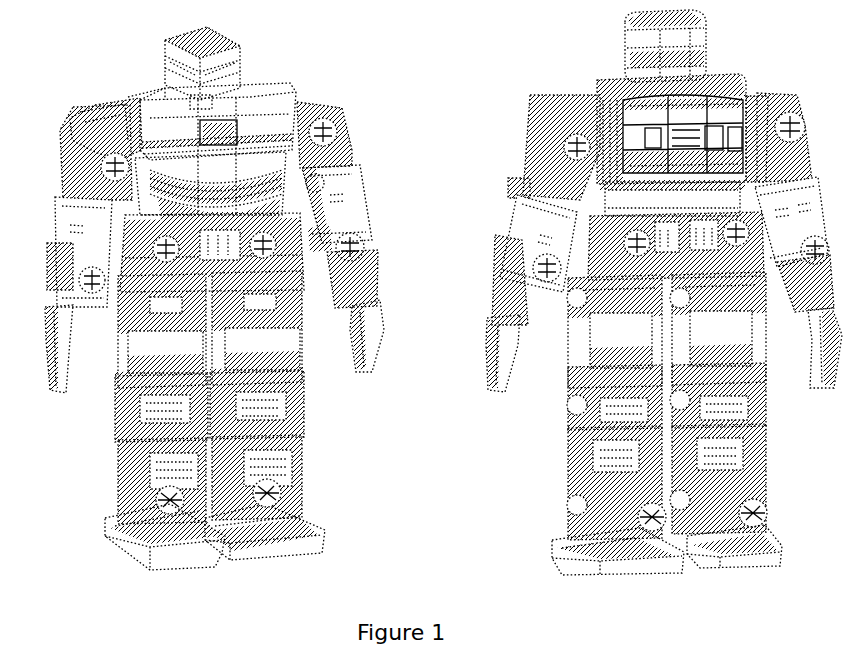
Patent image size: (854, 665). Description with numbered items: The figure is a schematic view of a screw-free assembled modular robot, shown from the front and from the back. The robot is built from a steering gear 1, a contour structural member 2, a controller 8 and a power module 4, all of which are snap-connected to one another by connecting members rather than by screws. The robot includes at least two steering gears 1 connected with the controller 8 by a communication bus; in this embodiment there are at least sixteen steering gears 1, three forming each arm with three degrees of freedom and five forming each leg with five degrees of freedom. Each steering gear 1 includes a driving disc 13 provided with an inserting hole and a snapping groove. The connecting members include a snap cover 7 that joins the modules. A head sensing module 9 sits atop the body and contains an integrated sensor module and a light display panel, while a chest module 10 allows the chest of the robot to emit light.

The steering gear 1 is at (77, 145).
The contour structural member 2 is at (98, 118).
The power module 4 is at (652, 208).
The snap cover 7 is at (318, 124).
The controller 8 is at (645, 110).
The head sensing module 9 is at (224, 72).
The chest module 10 is at (257, 112).
The driving disc 13 is at (288, 280).